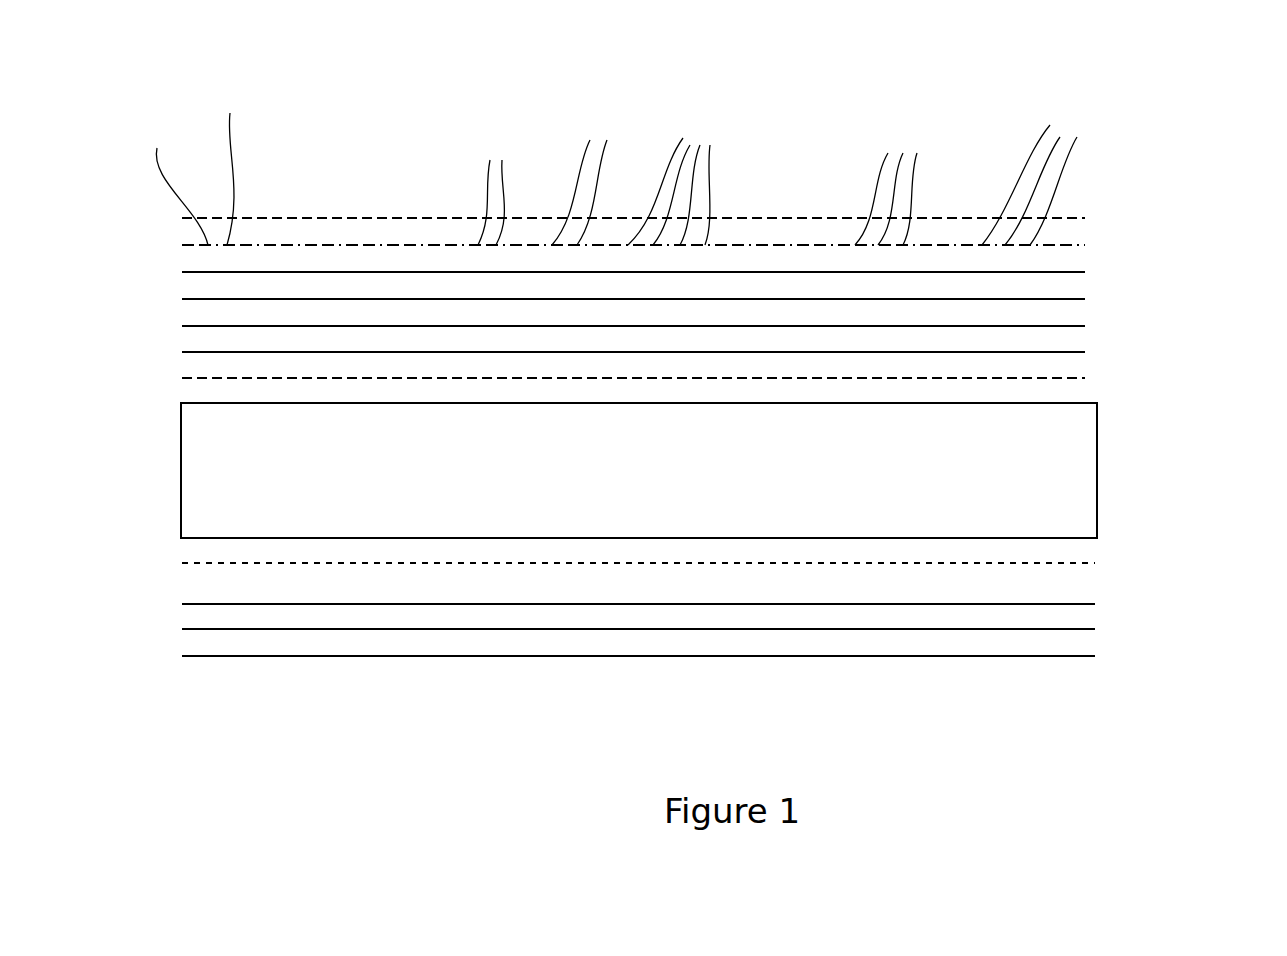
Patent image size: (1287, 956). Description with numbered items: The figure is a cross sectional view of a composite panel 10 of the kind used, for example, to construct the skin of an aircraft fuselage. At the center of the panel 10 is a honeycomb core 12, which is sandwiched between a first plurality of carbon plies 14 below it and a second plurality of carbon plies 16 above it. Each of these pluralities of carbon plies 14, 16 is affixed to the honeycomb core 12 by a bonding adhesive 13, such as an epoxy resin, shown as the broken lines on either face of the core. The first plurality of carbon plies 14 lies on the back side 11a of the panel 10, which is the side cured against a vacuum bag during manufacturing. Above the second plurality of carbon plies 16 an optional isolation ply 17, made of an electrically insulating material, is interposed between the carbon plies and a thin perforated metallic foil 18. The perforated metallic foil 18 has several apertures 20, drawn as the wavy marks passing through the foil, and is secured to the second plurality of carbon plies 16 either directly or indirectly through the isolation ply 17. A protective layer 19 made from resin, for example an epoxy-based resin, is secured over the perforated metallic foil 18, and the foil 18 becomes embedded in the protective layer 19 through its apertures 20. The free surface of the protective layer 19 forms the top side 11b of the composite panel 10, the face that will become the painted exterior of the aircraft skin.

The composite panel 10 is at (430, 181).
The back side 11a is at (416, 685).
The top side 11b is at (797, 188).
The honeycomb core 12 is at (1124, 466).
The bonding adhesive 13 is at (167, 390).
The first plurality of carbon plies 14 is at (1113, 603).
The second plurality of carbon plies 16 is at (1102, 298).
The isolation ply 17 is at (165, 271).
The perforated metallic foil 18 is at (1100, 244).
The protective layer 19 is at (346, 229).
The apertures 20 is at (612, 161).